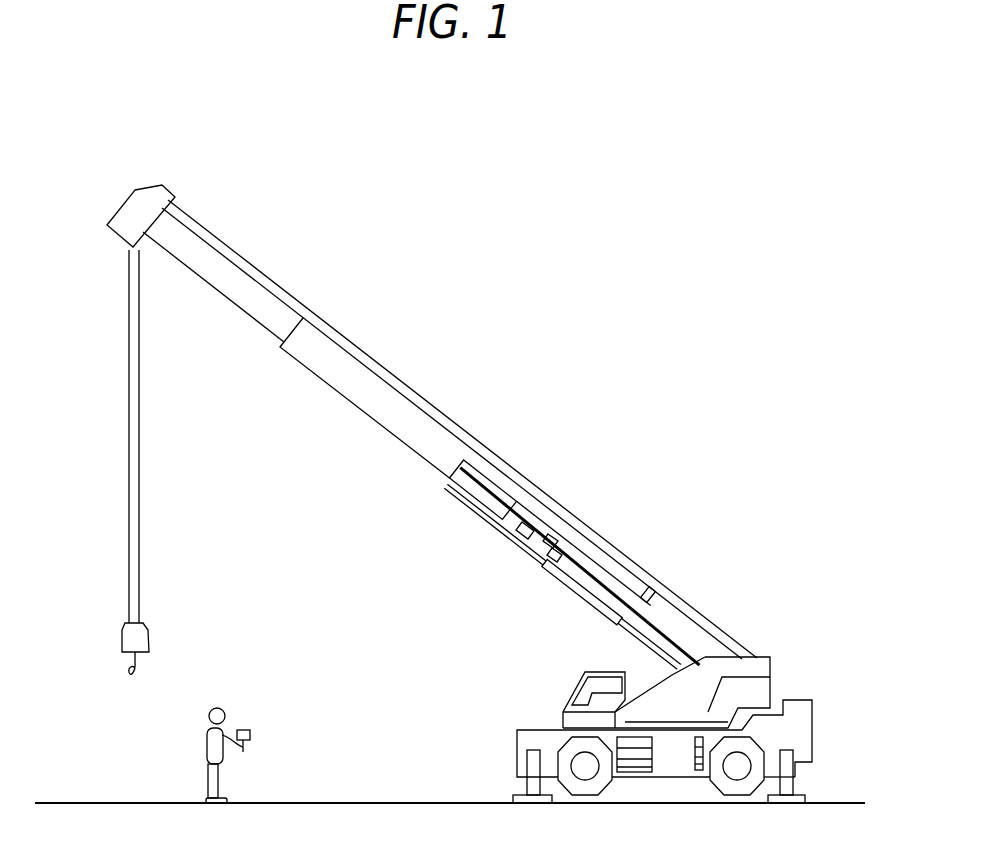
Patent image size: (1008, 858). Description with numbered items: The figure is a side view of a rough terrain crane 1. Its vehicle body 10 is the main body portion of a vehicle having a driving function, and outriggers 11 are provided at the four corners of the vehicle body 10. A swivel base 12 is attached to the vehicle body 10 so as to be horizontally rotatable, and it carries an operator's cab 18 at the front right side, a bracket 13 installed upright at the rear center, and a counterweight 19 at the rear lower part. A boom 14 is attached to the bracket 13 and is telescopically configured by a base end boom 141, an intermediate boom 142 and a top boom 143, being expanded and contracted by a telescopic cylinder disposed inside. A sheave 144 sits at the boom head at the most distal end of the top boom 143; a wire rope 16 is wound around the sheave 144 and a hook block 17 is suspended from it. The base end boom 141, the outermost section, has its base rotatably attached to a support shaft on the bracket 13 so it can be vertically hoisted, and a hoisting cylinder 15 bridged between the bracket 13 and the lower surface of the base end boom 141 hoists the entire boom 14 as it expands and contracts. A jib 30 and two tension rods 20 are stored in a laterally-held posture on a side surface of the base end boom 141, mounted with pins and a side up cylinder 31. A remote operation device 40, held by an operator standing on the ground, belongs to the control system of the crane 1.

The rough terrain crane 1 is at (708, 183).
The vehicle body 10 is at (516, 738).
The outriggers 11 is at (525, 781).
The swivel base 12 is at (690, 723).
The bracket 13 is at (755, 657).
The boom 14 is at (357, 514).
The base end boom 141 is at (483, 510).
The intermediate boom 142 is at (360, 413).
The top boom 143 is at (258, 330).
The sheave 144 is at (150, 190).
The hoisting cylinder 15 is at (614, 638).
The wire rope 16 is at (140, 500).
The hook block 17 is at (122, 638).
The operator's cab 18 is at (570, 700).
The counterweight 19 is at (765, 690).
The tension rods 20 is at (553, 538).
The jib 30 is at (527, 527).
The side up cylinder 31 is at (645, 598).
The remote operation device 40 is at (250, 735).